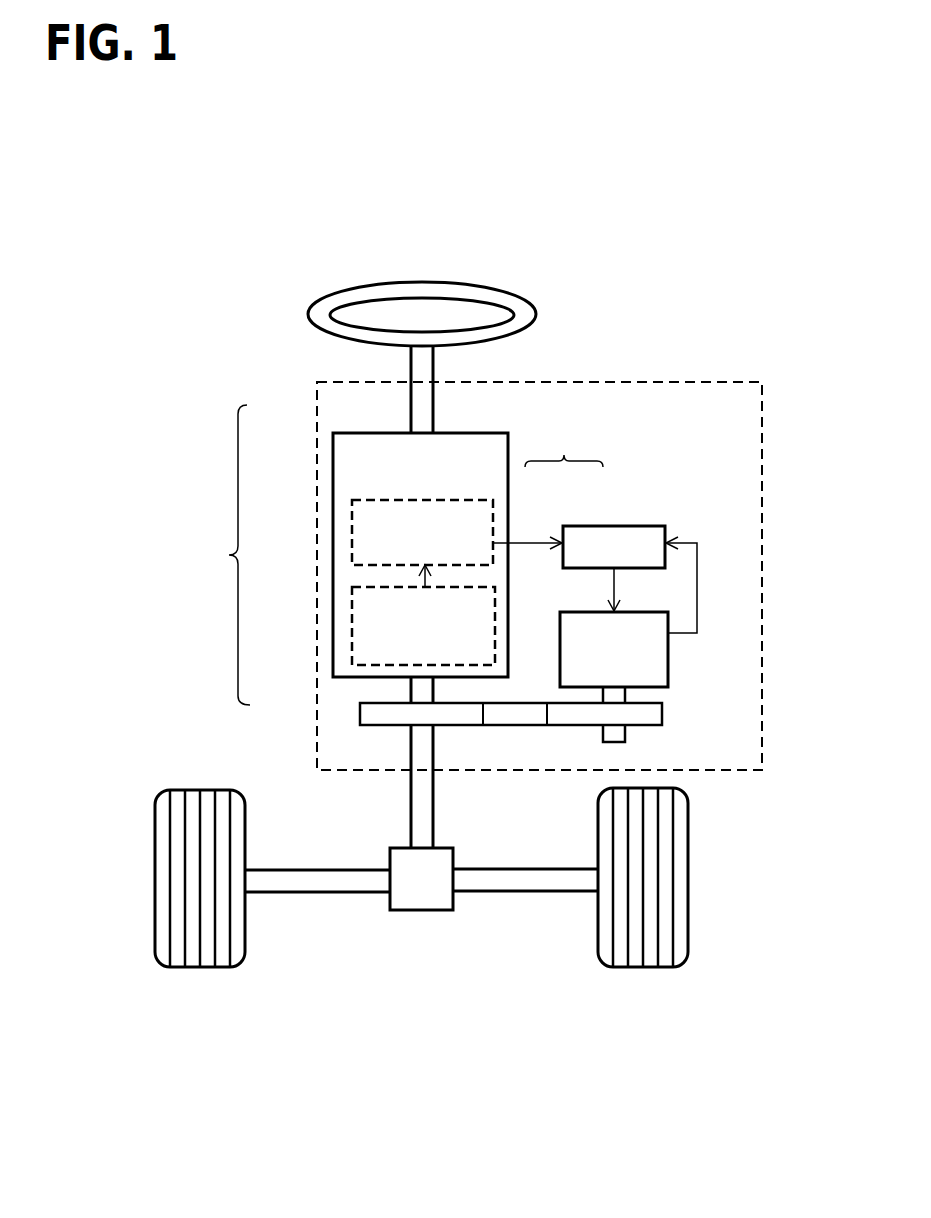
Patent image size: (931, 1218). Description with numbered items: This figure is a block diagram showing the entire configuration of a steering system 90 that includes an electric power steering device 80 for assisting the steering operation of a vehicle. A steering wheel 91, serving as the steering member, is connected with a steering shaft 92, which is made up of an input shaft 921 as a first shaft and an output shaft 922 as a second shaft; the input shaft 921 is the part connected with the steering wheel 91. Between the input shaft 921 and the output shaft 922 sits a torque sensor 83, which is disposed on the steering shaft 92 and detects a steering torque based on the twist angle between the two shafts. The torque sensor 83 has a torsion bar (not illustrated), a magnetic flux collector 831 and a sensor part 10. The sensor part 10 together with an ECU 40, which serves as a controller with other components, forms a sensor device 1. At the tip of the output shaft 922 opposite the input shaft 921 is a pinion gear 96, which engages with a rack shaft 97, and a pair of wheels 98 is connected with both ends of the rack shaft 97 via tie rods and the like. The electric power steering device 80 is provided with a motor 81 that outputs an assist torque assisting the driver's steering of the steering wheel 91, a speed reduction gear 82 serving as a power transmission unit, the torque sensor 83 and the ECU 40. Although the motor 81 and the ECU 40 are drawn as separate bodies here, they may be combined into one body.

The sensor device 1 is at (564, 444).
The sensor part 10 is at (495, 517).
The ECU 40 is at (581, 525).
The electric power steering device 80 is at (763, 410).
The motor 81 is at (670, 657).
The speed reduction gear 82 is at (664, 715).
The torque sensor 83 is at (465, 432).
The magnetic flux collector 831 is at (497, 591).
The steering system 90 is at (320, 1077).
The steering wheel 91 is at (308, 315).
The steering shaft 92 is at (222, 555).
The input shaft 921 is at (424, 418).
The output shaft 922 is at (422, 690).
The pinion gear 96 is at (412, 911).
The rack shaft 97 is at (312, 893).
The wheels 98 is at (217, 968).